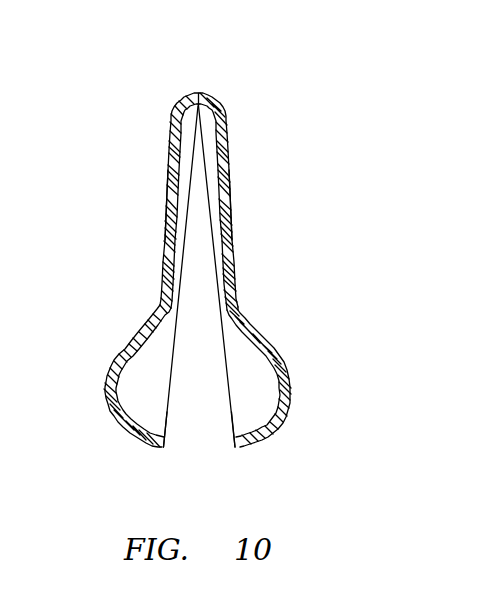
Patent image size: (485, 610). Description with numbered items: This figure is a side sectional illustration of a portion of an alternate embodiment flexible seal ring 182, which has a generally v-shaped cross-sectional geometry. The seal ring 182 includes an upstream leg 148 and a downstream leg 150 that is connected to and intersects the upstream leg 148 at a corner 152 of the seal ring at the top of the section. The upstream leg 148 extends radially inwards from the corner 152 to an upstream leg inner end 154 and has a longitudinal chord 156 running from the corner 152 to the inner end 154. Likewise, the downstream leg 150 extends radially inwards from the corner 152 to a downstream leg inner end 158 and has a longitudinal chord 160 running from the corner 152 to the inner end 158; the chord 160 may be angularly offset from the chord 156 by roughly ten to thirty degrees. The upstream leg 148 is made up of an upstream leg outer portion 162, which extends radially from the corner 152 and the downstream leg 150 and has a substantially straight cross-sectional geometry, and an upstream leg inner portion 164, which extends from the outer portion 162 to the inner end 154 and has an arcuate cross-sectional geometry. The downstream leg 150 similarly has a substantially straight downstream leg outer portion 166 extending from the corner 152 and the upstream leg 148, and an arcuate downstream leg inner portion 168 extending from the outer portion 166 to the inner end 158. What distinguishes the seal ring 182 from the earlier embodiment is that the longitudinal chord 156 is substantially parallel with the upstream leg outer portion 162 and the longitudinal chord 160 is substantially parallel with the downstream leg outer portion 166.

The flexible seal ring 182 is at (82, 125).
The corner 152 is at (210, 92).
The upstream leg 148 is at (152, 270).
The downstream leg 150 is at (252, 284).
The upstream leg outer portion 162 is at (167, 207).
The downstream leg outer portion 166 is at (232, 212).
The upstream leg inner portion 164 is at (110, 360).
The downstream leg inner portion 168 is at (292, 379).
The longitudinal chord 156 is at (172, 380).
The longitudinal chord 160 is at (227, 388).
The upstream leg inner end 154 is at (164, 449).
The downstream leg inner end 158 is at (233, 449).